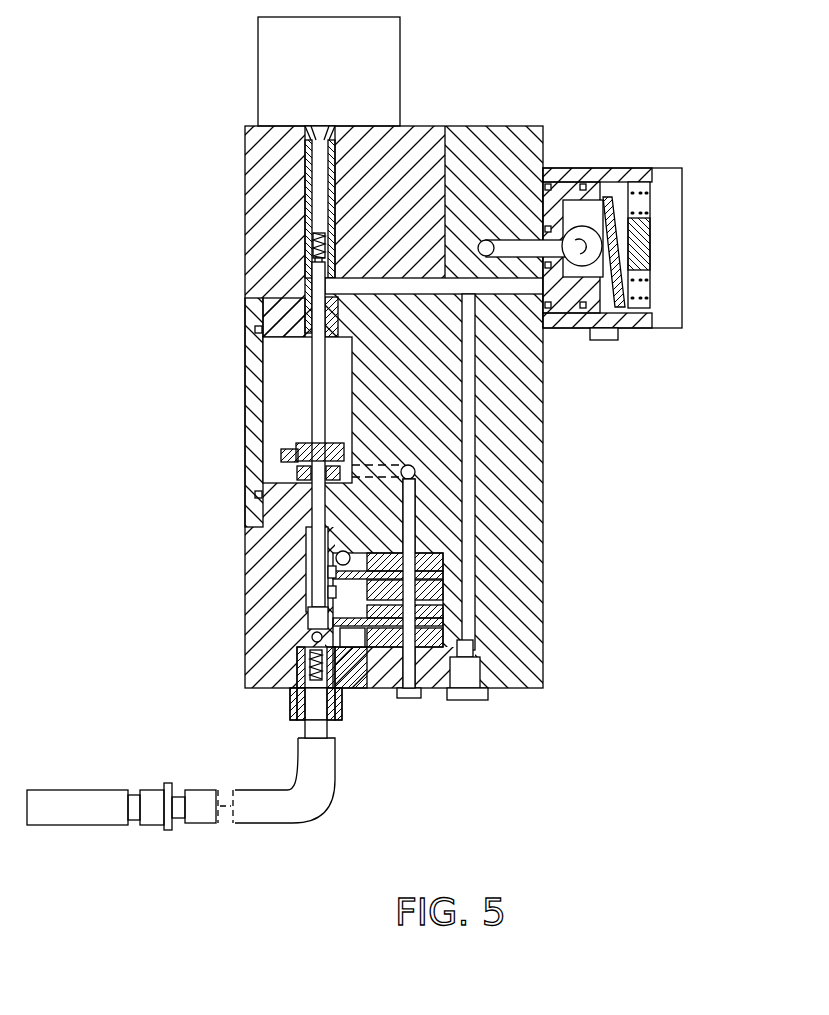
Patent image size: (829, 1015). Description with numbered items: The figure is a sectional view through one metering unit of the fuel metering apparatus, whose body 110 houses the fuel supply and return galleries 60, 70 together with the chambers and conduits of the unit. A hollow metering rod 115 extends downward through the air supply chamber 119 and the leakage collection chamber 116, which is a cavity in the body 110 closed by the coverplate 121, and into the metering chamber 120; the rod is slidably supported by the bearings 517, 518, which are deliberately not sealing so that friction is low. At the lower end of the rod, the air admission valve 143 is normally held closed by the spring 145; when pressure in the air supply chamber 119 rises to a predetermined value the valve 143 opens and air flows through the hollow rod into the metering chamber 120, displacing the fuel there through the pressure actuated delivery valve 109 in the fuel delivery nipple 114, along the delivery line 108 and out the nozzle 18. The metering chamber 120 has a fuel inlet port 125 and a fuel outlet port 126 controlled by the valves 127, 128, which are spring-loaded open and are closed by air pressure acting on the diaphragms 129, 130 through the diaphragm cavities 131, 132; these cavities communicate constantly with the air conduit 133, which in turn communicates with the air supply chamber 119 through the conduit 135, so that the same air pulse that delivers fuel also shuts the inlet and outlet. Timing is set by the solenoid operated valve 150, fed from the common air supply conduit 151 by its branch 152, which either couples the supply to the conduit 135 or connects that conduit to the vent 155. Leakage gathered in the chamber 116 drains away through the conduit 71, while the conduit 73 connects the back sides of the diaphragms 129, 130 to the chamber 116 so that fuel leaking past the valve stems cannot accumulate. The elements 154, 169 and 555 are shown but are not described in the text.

The nozzle 18 is at (148, 828).
The fuel supply gallery 60 is at (365, 652).
The fuel return gallery 70 is at (336, 557).
The conduit 71 is at (416, 472).
The conduit 73 is at (416, 513).
The delivery line 108 is at (320, 789).
The delivery valve 109 is at (300, 692).
The body 110 is at (506, 704).
The fuel delivery nipple 114 is at (292, 718).
The metering rod 115 is at (313, 350).
The leakage collection chamber 116 is at (292, 410).
The air supply chamber 119 is at (322, 165).
The metering chamber 120 is at (313, 632).
The coverplate 121 is at (248, 377).
The fuel inlet port 125 is at (308, 650).
The fuel outlet port 126 is at (330, 592).
The valve 127 is at (345, 650).
The valve 128 is at (337, 572).
The diaphragm 129 is at (477, 645).
The diaphragm 130 is at (445, 578).
The diaphragm cavity 131 is at (460, 619).
The diaphragm cavity 132 is at (460, 579).
The air conduit 133 is at (466, 407).
The conduit 135 is at (412, 283).
The valve 143 is at (313, 618).
The spring 145 is at (312, 248).
The solenoid operated valve 150 is at (663, 303).
The common air supply conduit 151 is at (492, 242).
The branch 152 is at (563, 285).
The conical spring 154 is at (527, 252).
The vent 155 is at (616, 339).
The solenoid 169 is at (392, 41).
The bearing 517 is at (303, 503).
The bearing 518 is at (308, 303).
The ball 555 is at (603, 248).